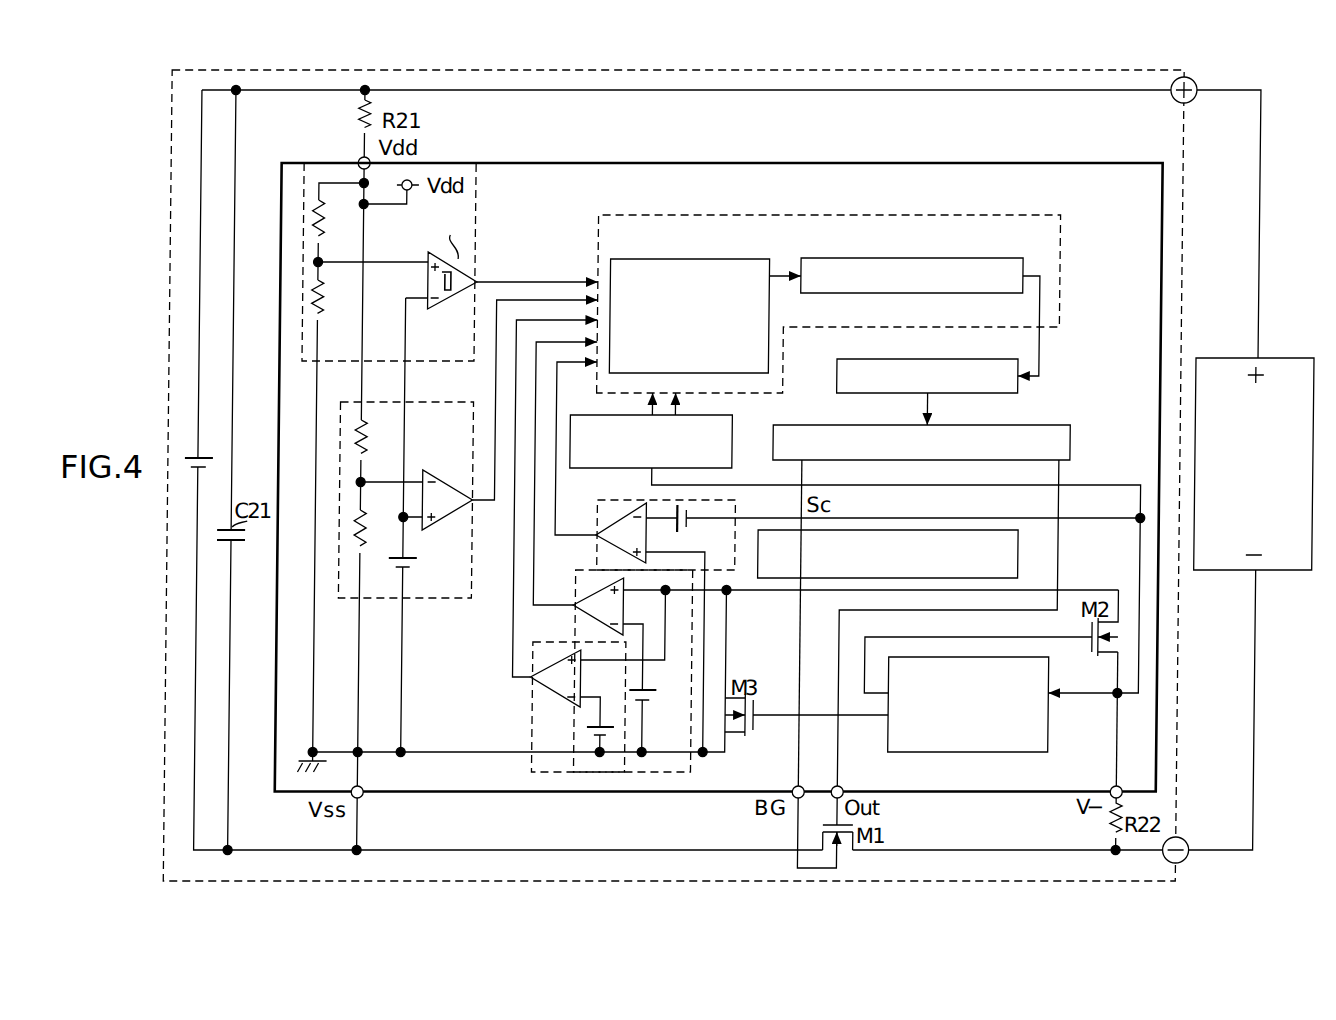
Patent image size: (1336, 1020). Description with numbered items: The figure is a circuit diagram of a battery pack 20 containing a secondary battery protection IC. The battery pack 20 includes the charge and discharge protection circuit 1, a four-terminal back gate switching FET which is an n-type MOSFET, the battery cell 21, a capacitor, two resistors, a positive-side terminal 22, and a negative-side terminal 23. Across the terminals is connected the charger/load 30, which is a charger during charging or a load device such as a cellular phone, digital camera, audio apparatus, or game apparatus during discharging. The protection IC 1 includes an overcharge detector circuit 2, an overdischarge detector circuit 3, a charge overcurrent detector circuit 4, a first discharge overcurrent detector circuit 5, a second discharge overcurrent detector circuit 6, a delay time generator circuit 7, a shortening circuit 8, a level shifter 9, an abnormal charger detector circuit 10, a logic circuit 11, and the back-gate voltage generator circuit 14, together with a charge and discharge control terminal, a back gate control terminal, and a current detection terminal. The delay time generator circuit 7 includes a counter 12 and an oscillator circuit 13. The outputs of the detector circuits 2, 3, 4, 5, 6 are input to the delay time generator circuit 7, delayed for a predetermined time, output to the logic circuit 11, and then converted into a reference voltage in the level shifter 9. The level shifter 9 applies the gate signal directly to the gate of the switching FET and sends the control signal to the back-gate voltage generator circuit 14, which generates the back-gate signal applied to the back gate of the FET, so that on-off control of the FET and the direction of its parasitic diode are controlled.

The charge and discharge protection circuit 1 is at (738, 163).
The overcharge detector circuit 2 is at (478, 204).
The overdischarge detector circuit 3 is at (428, 400).
The charge overcurrent detector circuit 4 is at (596, 515).
The first discharge overcurrent detector circuit 5 is at (575, 585).
The second discharge overcurrent detector circuit 6 is at (532, 722).
The delay time generator circuit 7 is at (596, 240).
The shortening circuit 8 is at (732, 441).
The level shifter 9 is at (1070, 436).
The abnormal charger detector circuit 10 is at (952, 752).
The logic circuit 11 is at (962, 359).
The counter 12 is at (963, 258).
The oscillator circuit 13 is at (652, 259).
The back-gate voltage generator circuit 14 is at (1019, 562).
The battery pack 20 is at (880, 70).
The battery cell 21 is at (201, 455).
The positive-side terminal 22 is at (1194, 82).
The negative-side terminal 23 is at (1190, 860).
The charger/load 30 is at (1290, 358).